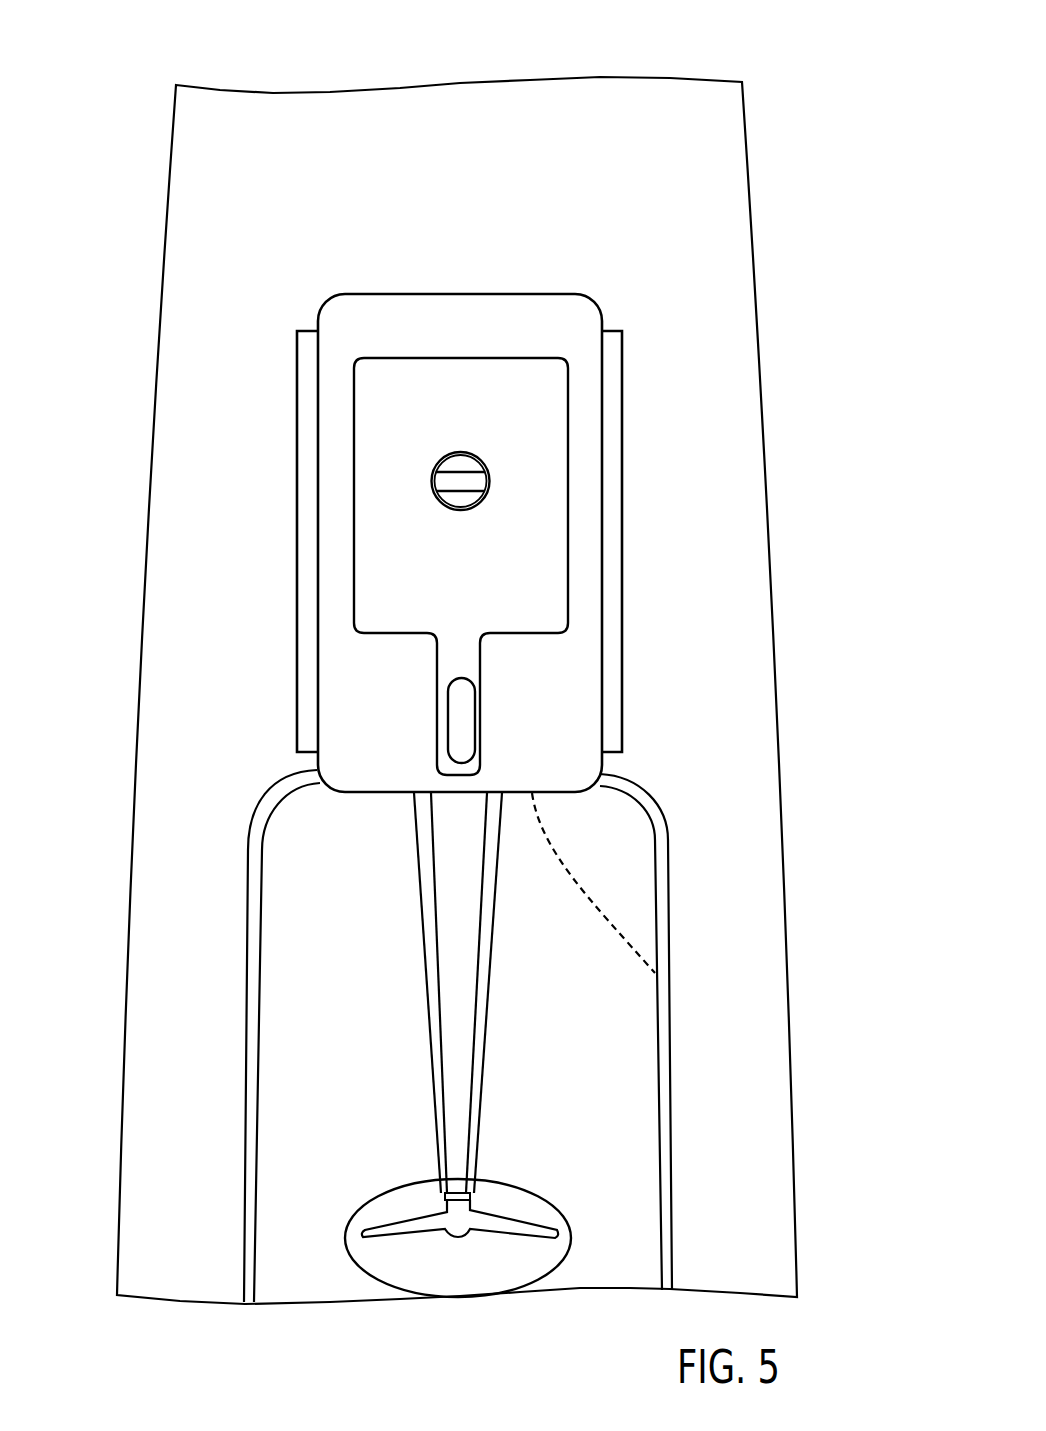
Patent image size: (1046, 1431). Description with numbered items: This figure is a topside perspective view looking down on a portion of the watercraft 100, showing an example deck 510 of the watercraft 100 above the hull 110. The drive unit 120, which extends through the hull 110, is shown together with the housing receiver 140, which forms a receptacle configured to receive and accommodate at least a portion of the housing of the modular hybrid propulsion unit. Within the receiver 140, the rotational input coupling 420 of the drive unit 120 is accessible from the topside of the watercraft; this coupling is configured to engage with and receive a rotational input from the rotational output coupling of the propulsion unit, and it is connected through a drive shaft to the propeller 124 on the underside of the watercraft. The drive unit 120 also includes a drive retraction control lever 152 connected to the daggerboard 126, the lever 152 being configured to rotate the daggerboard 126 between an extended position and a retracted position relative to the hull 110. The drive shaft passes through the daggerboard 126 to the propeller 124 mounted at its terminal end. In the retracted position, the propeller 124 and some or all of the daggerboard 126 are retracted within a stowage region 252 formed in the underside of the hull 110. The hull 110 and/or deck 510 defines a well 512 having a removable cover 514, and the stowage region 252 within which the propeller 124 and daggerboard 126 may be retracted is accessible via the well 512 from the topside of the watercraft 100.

The watercraft 100 is at (772, 65).
The hull 110 is at (767, 442).
The drive unit 120 is at (323, 260).
The housing receiver 140 is at (430, 392).
The rotational input coupling 420 is at (477, 465).
The drive retraction control lever 152 is at (465, 722).
The daggerboard 126 is at (457, 880).
The propeller 124 is at (462, 1228).
The stowage region 252 is at (498, 1272).
The deck 510 is at (218, 908).
The well 512 is at (310, 1035).
The removable cover 514 is at (607, 853).